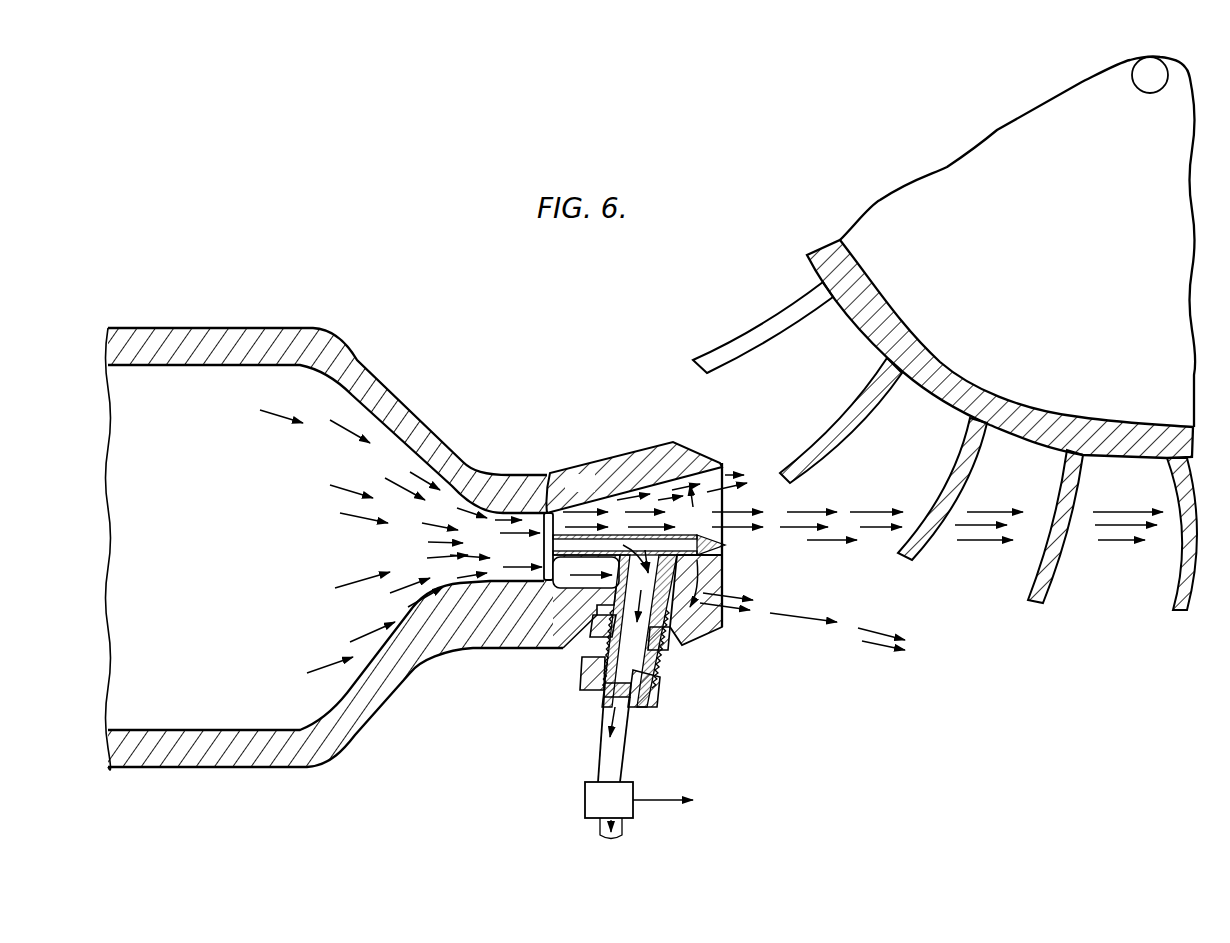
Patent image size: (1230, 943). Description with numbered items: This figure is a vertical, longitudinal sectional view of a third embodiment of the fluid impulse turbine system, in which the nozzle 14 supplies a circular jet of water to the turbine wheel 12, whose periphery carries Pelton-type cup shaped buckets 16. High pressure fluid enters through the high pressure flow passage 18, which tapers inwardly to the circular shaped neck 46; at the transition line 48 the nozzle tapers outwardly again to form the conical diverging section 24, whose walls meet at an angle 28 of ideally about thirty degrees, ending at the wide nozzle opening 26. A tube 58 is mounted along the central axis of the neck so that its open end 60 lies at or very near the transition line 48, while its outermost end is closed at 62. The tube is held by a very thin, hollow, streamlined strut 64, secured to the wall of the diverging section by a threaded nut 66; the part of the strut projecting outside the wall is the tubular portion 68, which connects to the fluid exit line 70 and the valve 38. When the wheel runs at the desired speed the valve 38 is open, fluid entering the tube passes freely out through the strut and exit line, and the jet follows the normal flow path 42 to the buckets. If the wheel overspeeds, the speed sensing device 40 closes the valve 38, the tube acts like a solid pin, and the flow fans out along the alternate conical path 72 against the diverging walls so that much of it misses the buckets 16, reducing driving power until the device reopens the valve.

The turbine wheel 12 is at (1080, 236).
The nozzle 14 is at (363, 362).
The cup shaped buckets 16 is at (1047, 592).
The high pressure flow passage 18 is at (335, 533).
The diverging section 24 is at (652, 480).
The nozzle opening 26 is at (719, 465).
The angle 28 is at (663, 515).
The valve 38 is at (585, 805).
The speed sensing device 40 is at (694, 800).
The normal flow path 42 is at (813, 510).
The circular shaped neck 46 is at (534, 518).
The transition line 48 is at (537, 587).
The tube 58 is at (572, 577).
The open end 60 is at (632, 486).
The closed end 62 is at (725, 549).
The strut 64 is at (707, 577).
The threaded nut 66 is at (665, 652).
The tubular portion 68 is at (657, 660).
The fluid exit line 70 is at (622, 737).
The alternate conical path 72 is at (675, 480).